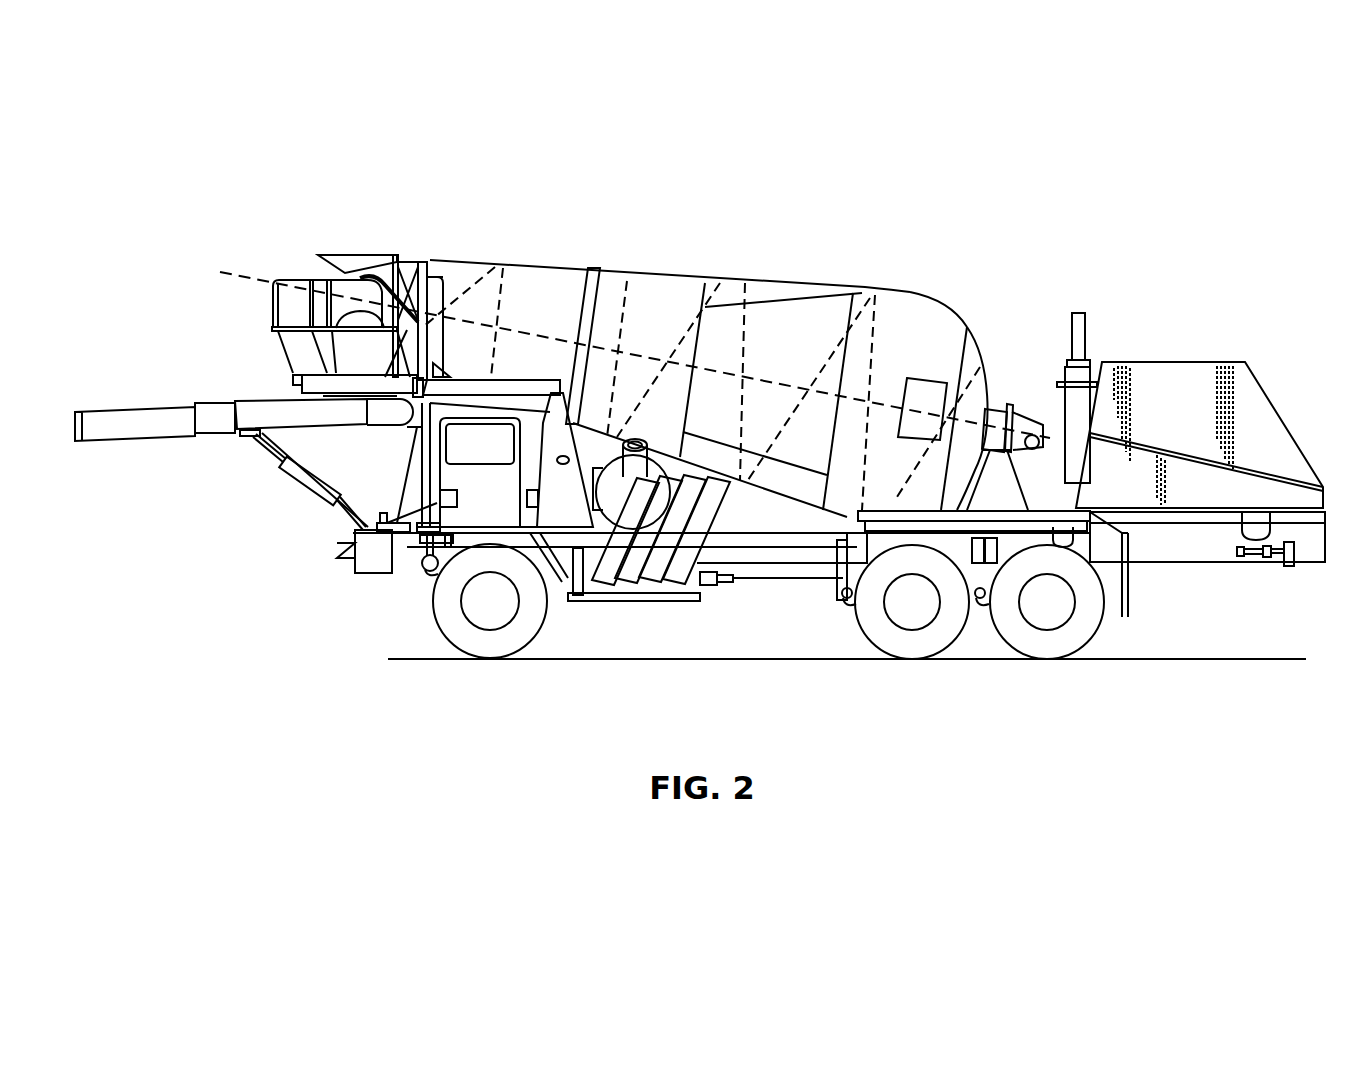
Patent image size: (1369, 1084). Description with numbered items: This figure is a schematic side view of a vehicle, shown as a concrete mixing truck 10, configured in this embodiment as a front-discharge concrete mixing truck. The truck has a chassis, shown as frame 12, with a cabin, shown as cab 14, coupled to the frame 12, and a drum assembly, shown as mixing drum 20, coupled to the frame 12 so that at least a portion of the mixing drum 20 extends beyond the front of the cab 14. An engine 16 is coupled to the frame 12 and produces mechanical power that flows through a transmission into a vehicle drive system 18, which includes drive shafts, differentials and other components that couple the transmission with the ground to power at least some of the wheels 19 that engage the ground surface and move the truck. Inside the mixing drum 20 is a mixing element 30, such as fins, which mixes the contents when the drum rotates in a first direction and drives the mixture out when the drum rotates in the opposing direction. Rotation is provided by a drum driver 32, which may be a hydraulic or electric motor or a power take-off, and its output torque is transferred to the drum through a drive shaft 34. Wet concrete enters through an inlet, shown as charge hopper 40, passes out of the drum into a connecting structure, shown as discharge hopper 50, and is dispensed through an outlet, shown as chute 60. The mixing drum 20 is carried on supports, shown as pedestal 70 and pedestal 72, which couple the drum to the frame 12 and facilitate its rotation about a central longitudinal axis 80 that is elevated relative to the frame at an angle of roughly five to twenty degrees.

The concrete mixing truck 10 is at (1215, 255).
The frame 12 is at (795, 545).
The cab 14 is at (410, 500).
The engine 16 is at (1260, 382).
The vehicle drive system 18 is at (408, 696).
The wheels 19 is at (493, 648).
The mixing drum 20 is at (780, 283).
The mixing element 30 is at (905, 292).
The drum driver 32 is at (1017, 413).
The drive shaft 34 is at (1000, 407).
The charge hopper 40 is at (345, 268).
The discharge hopper 50 is at (343, 338).
The chute 60 is at (148, 428).
The pedestal 70 is at (1000, 478).
The pedestal 72 is at (580, 555).
The longitudinal axis 80 is at (247, 276).